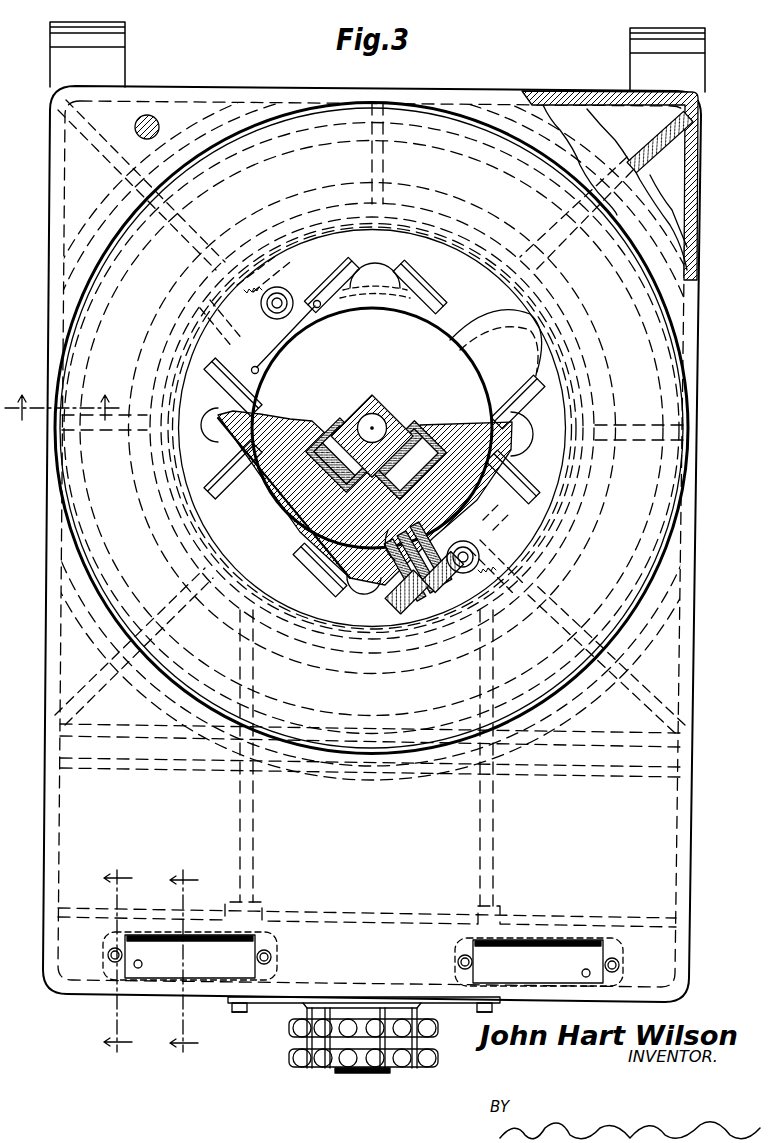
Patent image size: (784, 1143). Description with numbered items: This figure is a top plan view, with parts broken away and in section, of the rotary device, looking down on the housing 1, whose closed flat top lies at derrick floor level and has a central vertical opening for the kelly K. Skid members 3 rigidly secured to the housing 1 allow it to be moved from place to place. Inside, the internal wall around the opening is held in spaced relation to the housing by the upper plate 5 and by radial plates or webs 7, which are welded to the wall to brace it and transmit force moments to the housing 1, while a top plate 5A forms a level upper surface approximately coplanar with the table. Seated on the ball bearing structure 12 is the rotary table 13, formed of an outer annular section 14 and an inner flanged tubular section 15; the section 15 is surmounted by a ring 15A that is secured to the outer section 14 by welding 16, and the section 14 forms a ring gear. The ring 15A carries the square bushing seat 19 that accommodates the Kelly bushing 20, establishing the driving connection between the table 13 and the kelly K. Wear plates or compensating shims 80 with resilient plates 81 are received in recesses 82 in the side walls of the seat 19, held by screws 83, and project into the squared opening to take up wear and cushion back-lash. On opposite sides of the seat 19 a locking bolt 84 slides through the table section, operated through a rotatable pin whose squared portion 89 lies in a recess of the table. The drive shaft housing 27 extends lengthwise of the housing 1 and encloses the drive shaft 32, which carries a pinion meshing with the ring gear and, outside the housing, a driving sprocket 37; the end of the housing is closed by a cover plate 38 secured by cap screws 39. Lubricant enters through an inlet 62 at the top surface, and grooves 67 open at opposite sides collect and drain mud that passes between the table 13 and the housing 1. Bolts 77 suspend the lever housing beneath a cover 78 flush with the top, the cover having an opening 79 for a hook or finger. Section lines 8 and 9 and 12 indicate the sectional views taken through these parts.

The housing 1 is at (49, 219).
The skid members 3 is at (121, 64).
The upper plate 5 is at (562, 117).
The top plate 5A is at (655, 857).
The radial plates or webs 7 is at (650, 134).
The section line 8- 8 is at (184, 968).
The section line 9- 9 is at (116, 960).
The ball bearing structure 12 is at (63, 395).
The rotary table 13 is at (690, 358).
The outer annular section 14 is at (664, 398).
The inner flanged tubular section 15 is at (391, 318).
The ring 15A is at (453, 343).
The welding 16 is at (468, 338).
The bushing seat 19 is at (248, 413).
The Kelly bushing 20 is at (312, 399).
The drive shaft housing 27 is at (490, 856).
The drive shaft 32 is at (382, 1076).
The driving sprocket 37 is at (295, 1043).
The cover plate 38 is at (235, 1002).
The cap screws 39 is at (240, 1010).
The inlet 62 is at (151, 118).
The grooves 67 is at (52, 339).
The bolts 77 is at (111, 959).
The cover 78 is at (187, 970).
The opening 79 is at (137, 968).
The wear plates or compensating shims 80 is at (337, 313).
The resilient plates 81 is at (497, 388).
The recesses 82 is at (262, 372).
The screws 83 is at (431, 542).
The locking bolt 84 is at (362, 425).
The squared portion 89 is at (284, 291).
The kelly K is at (393, 393).